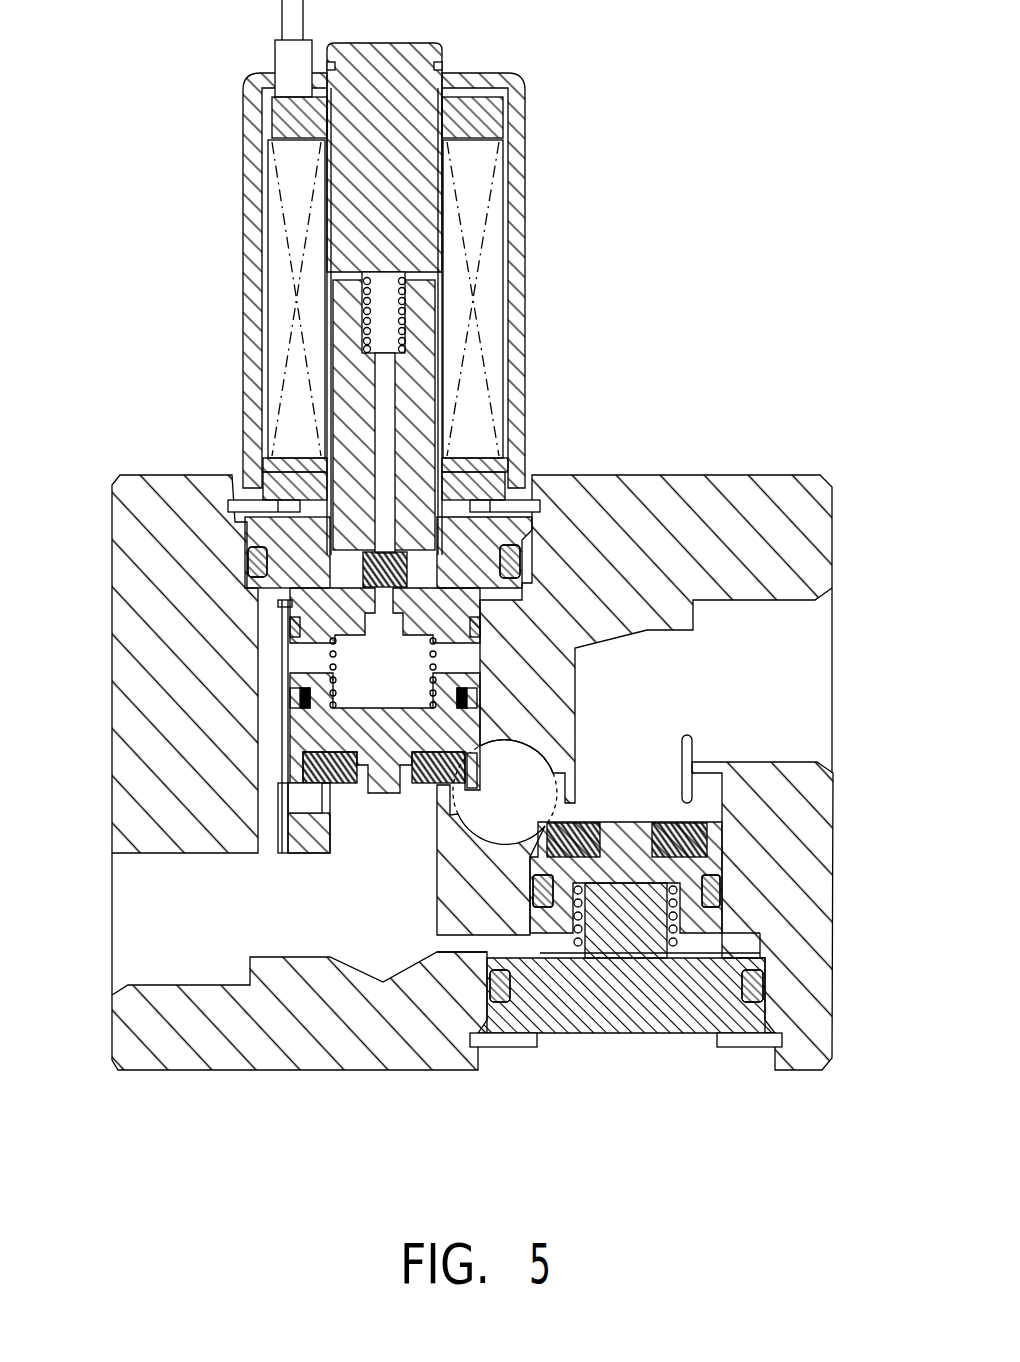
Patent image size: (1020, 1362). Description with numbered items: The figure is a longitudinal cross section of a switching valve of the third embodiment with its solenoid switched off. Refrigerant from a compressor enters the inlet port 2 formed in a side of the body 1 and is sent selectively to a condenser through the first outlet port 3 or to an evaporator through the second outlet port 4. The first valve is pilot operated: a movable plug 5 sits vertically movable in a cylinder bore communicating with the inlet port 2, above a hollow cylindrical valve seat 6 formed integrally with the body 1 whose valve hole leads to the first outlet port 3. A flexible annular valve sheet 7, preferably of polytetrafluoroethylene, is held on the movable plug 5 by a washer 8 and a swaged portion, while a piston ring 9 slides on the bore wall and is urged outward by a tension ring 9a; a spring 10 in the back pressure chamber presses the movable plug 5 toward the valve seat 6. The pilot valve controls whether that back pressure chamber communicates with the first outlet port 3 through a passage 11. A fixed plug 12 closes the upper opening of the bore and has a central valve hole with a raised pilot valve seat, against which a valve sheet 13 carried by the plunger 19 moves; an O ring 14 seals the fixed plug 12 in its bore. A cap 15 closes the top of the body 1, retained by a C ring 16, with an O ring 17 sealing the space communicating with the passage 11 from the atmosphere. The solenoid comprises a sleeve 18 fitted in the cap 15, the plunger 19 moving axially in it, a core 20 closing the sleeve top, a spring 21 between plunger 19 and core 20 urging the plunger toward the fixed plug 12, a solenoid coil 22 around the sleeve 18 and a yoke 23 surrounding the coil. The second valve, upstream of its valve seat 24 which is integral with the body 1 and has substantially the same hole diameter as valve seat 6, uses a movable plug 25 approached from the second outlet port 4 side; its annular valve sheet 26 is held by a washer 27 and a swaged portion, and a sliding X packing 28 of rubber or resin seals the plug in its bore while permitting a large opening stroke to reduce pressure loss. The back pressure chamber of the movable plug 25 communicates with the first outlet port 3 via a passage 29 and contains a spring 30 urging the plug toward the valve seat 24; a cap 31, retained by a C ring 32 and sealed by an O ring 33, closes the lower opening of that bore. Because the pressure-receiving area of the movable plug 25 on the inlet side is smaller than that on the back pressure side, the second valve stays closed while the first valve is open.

The body 1 is at (828, 575).
The inlet port 2 is at (560, 778).
The first outlet port 3 is at (118, 912).
The second outlet port 4 is at (822, 685).
The movable plug 5 is at (300, 730).
The valve seat 6 is at (273, 804).
The valve sheet 7 is at (420, 785).
The washer 8 is at (357, 785).
The piston ring 9 is at (293, 698).
The tension ring 9a is at (336, 700).
The spring 10 is at (335, 647).
The passage 11 is at (272, 783).
The fixed plug 12 is at (292, 626).
The valve sheet 13 is at (330, 570).
The O ring 14 is at (523, 628).
The cap 15 is at (245, 520).
The C ring 16 is at (255, 500).
The O ring 17 is at (528, 555).
The sleeve 18 is at (510, 500).
The plunger 19 is at (428, 383).
The core 20 is at (390, 43).
The spring 21 is at (387, 300).
The solenoid coil 22 is at (500, 257).
The yoke 23 is at (520, 150).
The valve seat 24 is at (693, 790).
The movable plug 25 is at (722, 827).
The valve sheet 26 is at (530, 850).
The washer 27 is at (660, 822).
The X packing 28 is at (722, 893).
The passage 29 is at (487, 943).
The spring 30 is at (700, 952).
The cap 31 is at (617, 1035).
The C ring 32 is at (495, 1047).
The O ring 33 is at (765, 985).